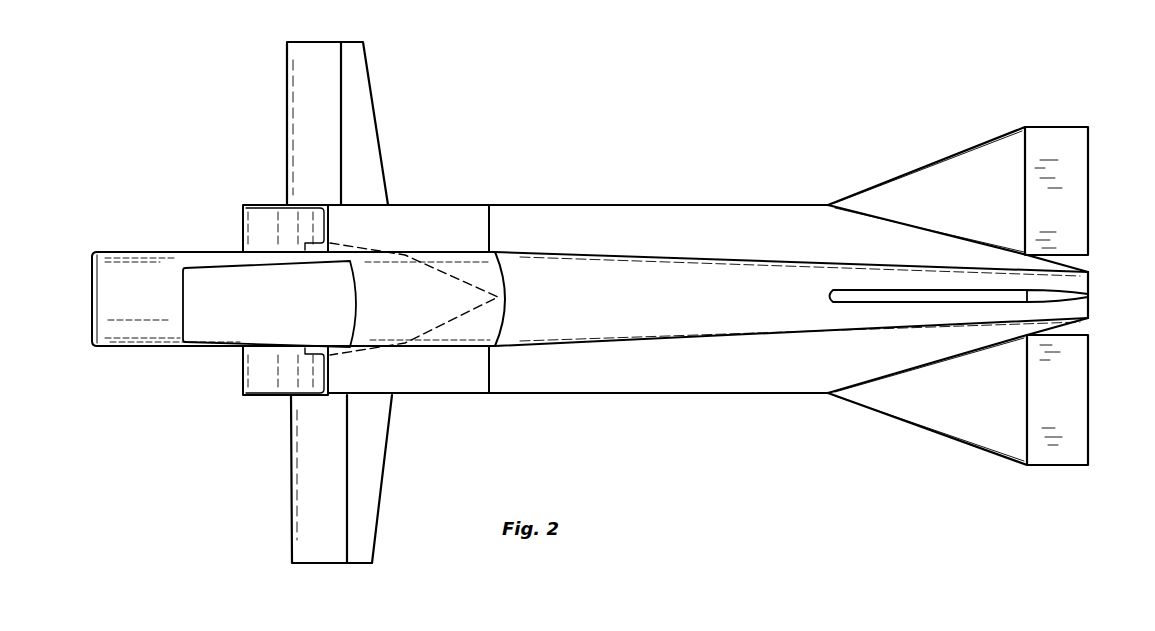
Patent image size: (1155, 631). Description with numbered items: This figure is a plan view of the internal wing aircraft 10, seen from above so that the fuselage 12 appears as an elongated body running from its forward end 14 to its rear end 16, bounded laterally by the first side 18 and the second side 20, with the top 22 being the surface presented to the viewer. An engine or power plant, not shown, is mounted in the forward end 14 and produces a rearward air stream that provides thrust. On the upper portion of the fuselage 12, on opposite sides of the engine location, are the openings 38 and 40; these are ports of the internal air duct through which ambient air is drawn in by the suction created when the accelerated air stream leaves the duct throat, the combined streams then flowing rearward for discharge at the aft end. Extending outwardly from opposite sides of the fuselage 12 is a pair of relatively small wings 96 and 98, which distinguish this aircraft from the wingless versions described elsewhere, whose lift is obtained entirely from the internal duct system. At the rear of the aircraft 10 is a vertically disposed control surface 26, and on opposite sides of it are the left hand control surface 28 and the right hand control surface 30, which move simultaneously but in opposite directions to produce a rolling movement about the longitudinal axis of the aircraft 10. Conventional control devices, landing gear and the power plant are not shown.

The internal wing aircraft 10 is at (493, 190).
The fuselage 12 is at (167, 267).
The forward end 14 is at (96, 290).
The rear end 16 is at (1090, 290).
The first side 18 is at (653, 394).
The second side 20 is at (643, 205).
The top 22 is at (602, 306).
The vertically disposed control surface 26 is at (1055, 294).
The left hand control surface 28 is at (1083, 408).
The right hand control surface 30 is at (1080, 160).
The opening 38 is at (258, 370).
The opening 40 is at (273, 215).
The wing 96 is at (297, 478).
The wing 98 is at (292, 72).